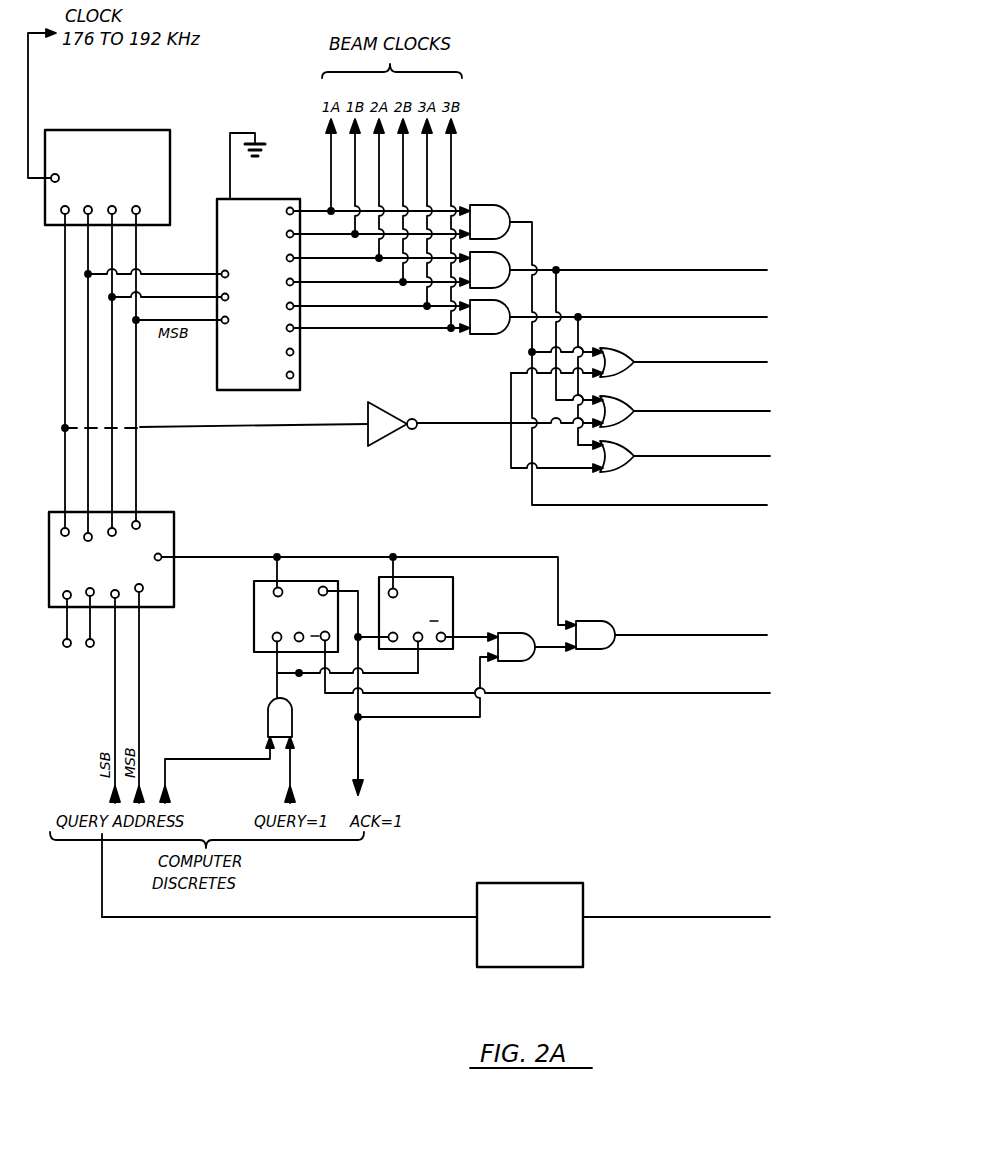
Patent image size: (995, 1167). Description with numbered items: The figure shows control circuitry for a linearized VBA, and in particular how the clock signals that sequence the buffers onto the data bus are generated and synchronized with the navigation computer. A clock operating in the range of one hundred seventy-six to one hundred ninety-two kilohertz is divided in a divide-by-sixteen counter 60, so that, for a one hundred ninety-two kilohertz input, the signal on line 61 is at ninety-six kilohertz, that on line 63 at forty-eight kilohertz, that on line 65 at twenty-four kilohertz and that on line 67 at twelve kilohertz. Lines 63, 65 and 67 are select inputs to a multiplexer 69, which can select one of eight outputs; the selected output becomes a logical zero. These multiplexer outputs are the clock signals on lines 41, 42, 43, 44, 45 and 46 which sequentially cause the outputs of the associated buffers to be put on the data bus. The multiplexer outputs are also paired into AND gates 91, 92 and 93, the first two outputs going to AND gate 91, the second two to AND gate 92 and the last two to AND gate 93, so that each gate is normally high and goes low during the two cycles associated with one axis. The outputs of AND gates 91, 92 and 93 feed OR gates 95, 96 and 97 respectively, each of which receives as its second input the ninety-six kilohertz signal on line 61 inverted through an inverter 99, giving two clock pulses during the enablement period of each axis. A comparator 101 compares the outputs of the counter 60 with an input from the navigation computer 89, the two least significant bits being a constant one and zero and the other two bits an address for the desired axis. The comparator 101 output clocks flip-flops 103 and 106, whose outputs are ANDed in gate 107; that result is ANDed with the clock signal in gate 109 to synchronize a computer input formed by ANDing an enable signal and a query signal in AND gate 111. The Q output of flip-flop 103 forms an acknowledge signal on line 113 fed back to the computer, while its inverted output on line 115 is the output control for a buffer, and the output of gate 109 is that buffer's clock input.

The divide by 16 counter 60 is at (108, 133).
The line 61 is at (64, 292).
The line 63 is at (87, 308).
The line 65 is at (113, 357).
The line 67 is at (137, 403).
The multiplexer 69 is at (301, 354).
The line 41 is at (331, 134).
The line 42 is at (354, 156).
The line 43 is at (378, 185).
The line 44 is at (404, 180).
The line 45 is at (428, 181).
The line 46 is at (452, 190).
The AND gate 91 is at (499, 213).
The AND gate 92 is at (511, 262).
The AND gate 93 is at (514, 306).
The OR gate 95 is at (613, 366).
The OR gate 96 is at (616, 412).
The OR gate 97 is at (620, 452).
The inverter 99 is at (392, 412).
The comparator 101 is at (174, 537).
The flip-flop 103 is at (296, 582).
The flip-flop 106 is at (412, 577).
The gate 107 is at (513, 641).
The gate 109 is at (590, 627).
The AND gate 111 is at (270, 703).
The line 113 is at (360, 752).
The line 115 is at (579, 694).
The navigation computer 89 is at (570, 891).